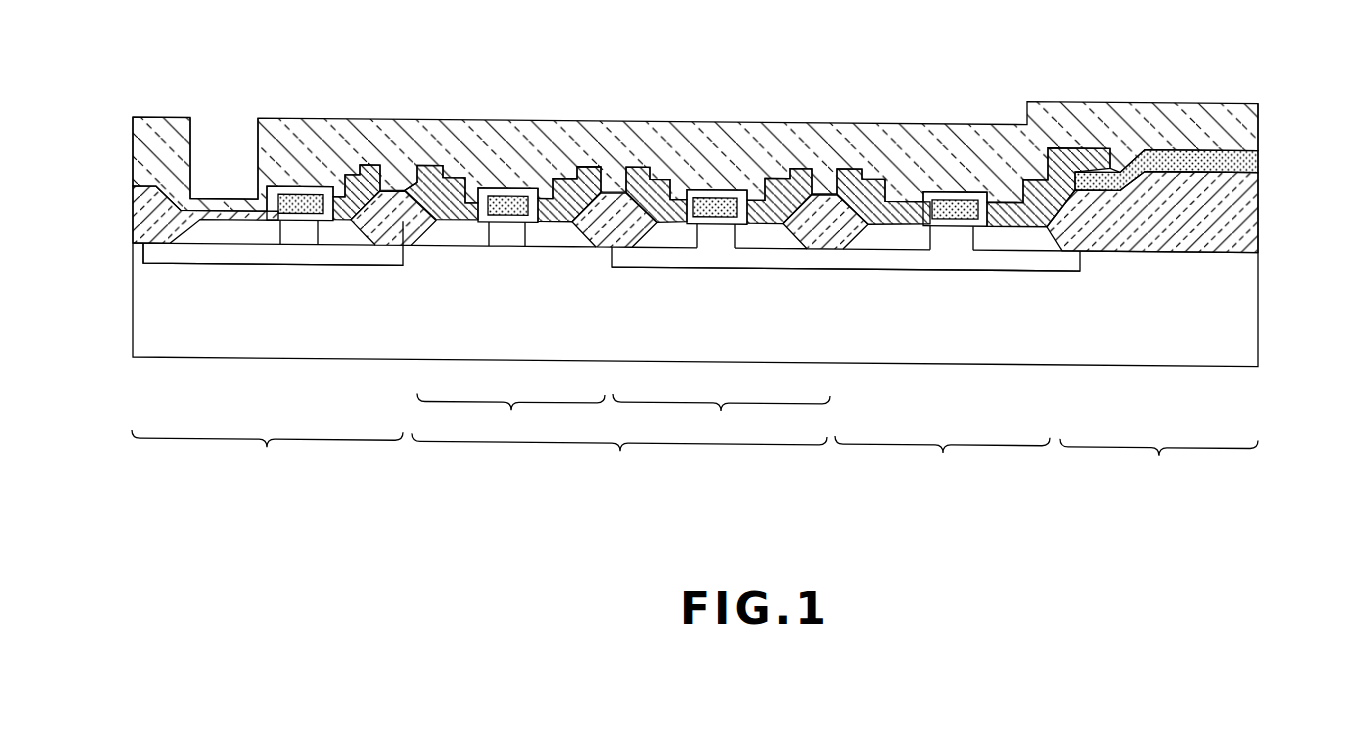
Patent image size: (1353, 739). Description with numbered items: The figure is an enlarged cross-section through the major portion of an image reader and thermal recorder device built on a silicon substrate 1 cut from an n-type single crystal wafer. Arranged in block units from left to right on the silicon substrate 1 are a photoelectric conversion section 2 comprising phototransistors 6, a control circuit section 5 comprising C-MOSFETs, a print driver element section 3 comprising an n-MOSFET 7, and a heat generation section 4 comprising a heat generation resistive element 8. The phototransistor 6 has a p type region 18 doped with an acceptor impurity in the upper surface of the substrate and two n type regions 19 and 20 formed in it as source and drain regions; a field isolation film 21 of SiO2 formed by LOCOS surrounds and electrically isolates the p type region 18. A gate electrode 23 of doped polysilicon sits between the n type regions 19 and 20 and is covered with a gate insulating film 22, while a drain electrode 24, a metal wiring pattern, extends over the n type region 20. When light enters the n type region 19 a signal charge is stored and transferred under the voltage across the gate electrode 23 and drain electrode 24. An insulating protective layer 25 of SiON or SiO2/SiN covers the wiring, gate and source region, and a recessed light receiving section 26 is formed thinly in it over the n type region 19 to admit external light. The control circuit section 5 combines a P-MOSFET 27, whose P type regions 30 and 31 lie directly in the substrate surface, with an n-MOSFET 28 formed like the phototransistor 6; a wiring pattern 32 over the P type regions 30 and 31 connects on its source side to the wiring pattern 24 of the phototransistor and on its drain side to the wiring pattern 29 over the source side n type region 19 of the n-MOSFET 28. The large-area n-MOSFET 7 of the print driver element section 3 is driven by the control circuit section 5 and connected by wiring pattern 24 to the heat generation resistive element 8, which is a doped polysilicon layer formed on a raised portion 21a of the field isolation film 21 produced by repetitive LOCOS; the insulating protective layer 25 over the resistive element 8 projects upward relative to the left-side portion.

The silicon substrate 1 is at (155, 300).
The photoelectric conversion section 2 is at (267, 457).
The print driver element section 3 is at (942, 462).
The heat generation section 4 is at (1159, 466).
The control circuit section 5 is at (619, 459).
The phototransistor 6 is at (283, 262).
The n-MOSFET 7 is at (975, 248).
The heat generation resistive element 8 is at (1222, 152).
The p type region 18 is at (190, 262).
The n type region 19 is at (240, 232).
The n type region 20 is at (366, 236).
The field isolation film 21 is at (150, 208).
The raised portion 21a is at (1172, 185).
The gate insulating film 22 is at (300, 236).
The gate electrode 23 is at (305, 197).
The drain electrode 24 is at (355, 176).
The insulating protective layer 25 is at (150, 140).
The recessed light receiving section 26 is at (230, 168).
The P-MOSFET 27 is at (511, 419).
The n-MOSFET 28 is at (721, 419).
The wiring pattern 29 is at (660, 180).
The P type region 30 is at (455, 236).
The P type region 31 is at (570, 236).
The wiring pattern 32 is at (450, 180).